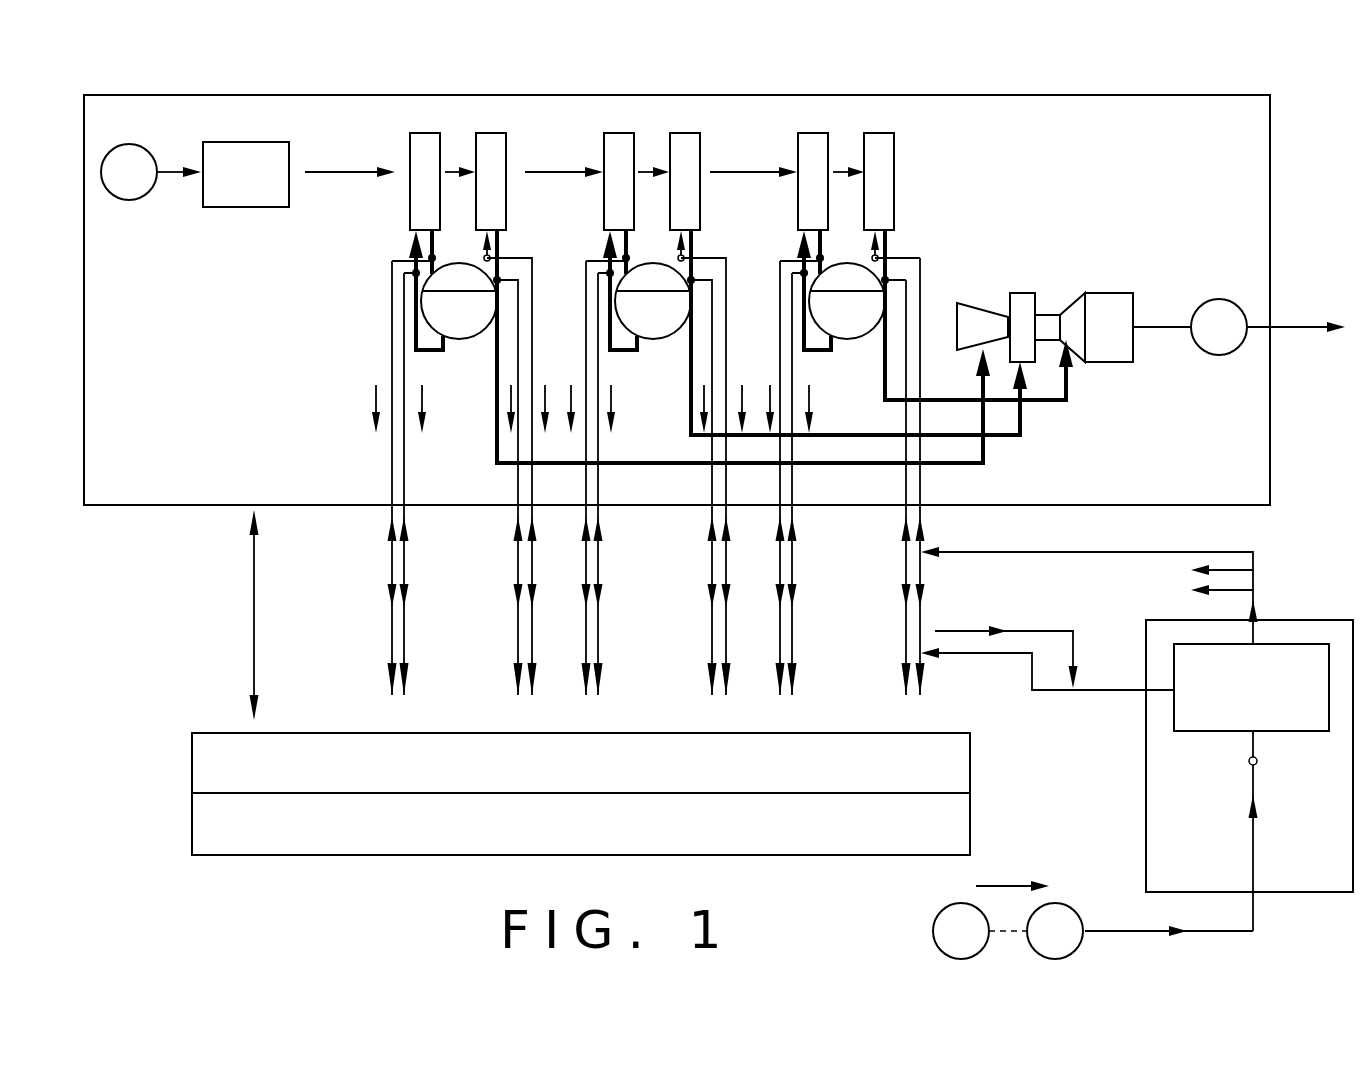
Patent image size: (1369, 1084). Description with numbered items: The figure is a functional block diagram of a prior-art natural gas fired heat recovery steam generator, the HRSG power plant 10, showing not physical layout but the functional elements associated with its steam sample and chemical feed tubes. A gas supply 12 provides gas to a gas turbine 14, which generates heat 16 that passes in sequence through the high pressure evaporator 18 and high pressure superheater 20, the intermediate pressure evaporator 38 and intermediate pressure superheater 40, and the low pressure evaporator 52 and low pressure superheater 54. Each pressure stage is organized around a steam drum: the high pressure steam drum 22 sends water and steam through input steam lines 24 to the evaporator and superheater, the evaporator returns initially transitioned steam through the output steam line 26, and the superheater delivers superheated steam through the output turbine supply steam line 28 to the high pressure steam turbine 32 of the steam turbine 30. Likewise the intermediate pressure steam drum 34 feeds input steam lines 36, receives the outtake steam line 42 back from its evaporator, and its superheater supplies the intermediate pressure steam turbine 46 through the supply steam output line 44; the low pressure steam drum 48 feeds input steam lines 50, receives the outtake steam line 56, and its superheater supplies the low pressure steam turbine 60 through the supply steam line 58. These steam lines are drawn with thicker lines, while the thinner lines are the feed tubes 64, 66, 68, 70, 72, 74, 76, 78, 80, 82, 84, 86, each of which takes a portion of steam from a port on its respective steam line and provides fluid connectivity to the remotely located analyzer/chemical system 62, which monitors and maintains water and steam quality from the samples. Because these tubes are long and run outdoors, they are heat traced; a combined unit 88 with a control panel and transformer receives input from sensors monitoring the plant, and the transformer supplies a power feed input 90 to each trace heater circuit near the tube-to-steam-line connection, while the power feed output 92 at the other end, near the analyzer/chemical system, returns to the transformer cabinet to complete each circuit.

The HRSG power plant 10 is at (84, 352).
The gas supply 12 is at (133, 200).
The gas turbine 14 is at (216, 142).
The heat 16 is at (307, 135).
The high pressure evaporator 18 is at (425, 133).
The high pressure superheater 20 is at (488, 133).
The high pressure steam drum 22 is at (478, 339).
The input steam lines 24 is at (426, 252).
The output steam line 26 is at (406, 228).
The output turbine supply steam line 28 is at (498, 242).
The steam turbine 30 is at (1043, 188).
The high pressure steam turbine 32 is at (985, 312).
The intermediate pressure steam drum 34 is at (675, 339).
The input steam lines 36 is at (606, 257).
The intermediate pressure evaporator 38 is at (619, 133).
The intermediate pressure superheater 40 is at (686, 133).
The outtake steam line 42 is at (608, 275).
The superheated intermediate pressure supply steam output line 44 is at (692, 244).
The intermediate pressure steam turbine 46 is at (1015, 292).
The low pressure steam drum 48 is at (868, 339).
The input steam lines 50 is at (800, 258).
The low pressure evaporator 52 is at (810, 133).
The low pressure superheater 54 is at (878, 133).
The outtake steam line 56 is at (846, 239).
The superheated low pressure supply steam line 58 is at (890, 270).
The low pressure steam turbine 60 is at (1075, 295).
The analyzer/chemical system 62 is at (192, 784).
The feed tube 64 is at (405, 637).
The feed tube 66 is at (390, 638).
The feed tube 68 is at (535, 626).
The feed tube 70 is at (517, 634).
The feed tube 72 is at (598, 629).
The feed tube 74 is at (586, 633).
The feed tube 76 is at (727, 650).
The feed tube 78 is at (712, 617).
The feed tube 80 is at (793, 643).
The feed tube 82 is at (781, 612).
The feed tube 84 is at (921, 573).
The feed tube 86 is at (921, 514).
The combined unit 88 is at (1146, 836).
The power feed input 90 is at (1256, 587).
The power feed output 92 is at (1113, 687).